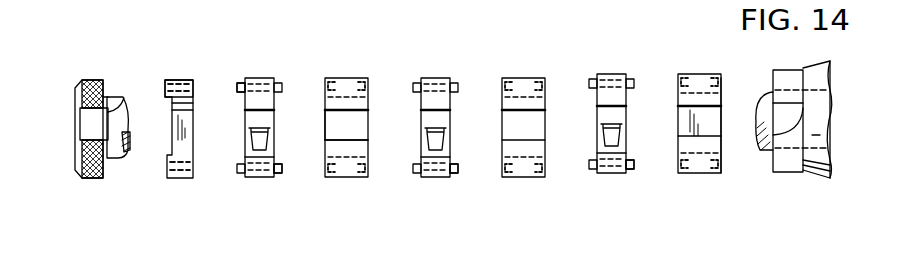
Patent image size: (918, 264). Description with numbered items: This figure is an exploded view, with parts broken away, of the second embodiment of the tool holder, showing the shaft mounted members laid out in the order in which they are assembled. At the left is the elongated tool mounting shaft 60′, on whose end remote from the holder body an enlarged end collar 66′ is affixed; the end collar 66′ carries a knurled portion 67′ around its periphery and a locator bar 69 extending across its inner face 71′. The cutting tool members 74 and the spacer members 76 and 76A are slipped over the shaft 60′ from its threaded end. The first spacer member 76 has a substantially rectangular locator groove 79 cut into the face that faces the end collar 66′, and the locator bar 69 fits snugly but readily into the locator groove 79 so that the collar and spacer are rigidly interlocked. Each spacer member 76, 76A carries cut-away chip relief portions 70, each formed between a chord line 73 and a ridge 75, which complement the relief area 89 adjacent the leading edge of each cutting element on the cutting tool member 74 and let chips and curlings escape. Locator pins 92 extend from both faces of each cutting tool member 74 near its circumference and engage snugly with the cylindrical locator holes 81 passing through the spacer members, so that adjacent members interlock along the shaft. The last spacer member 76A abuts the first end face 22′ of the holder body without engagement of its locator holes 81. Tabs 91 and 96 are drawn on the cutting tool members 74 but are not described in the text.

The first end face 22′ is at (772, 82).
The tool mounting shaft 60′ is at (97, 131).
The end collar 66′ is at (88, 80).
The knurled portion 67′ is at (92, 178).
The locator bar 69 is at (112, 108).
The chip relief portion 70 is at (187, 130).
The inner face 71′ is at (108, 97).
The chord line 73 is at (330, 110).
The cutting tool member 74 is at (276, 71).
The ridge 75 is at (365, 140).
The spacer member 76 is at (176, 69).
The spacer member 76A is at (349, 66).
The locator groove 79 is at (170, 155).
The locator hole 81 is at (188, 78).
The relief area 89 is at (267, 118).
The tab 91 is at (455, 176).
The locator pin 92 is at (240, 83).
The tab 96 is at (278, 173).